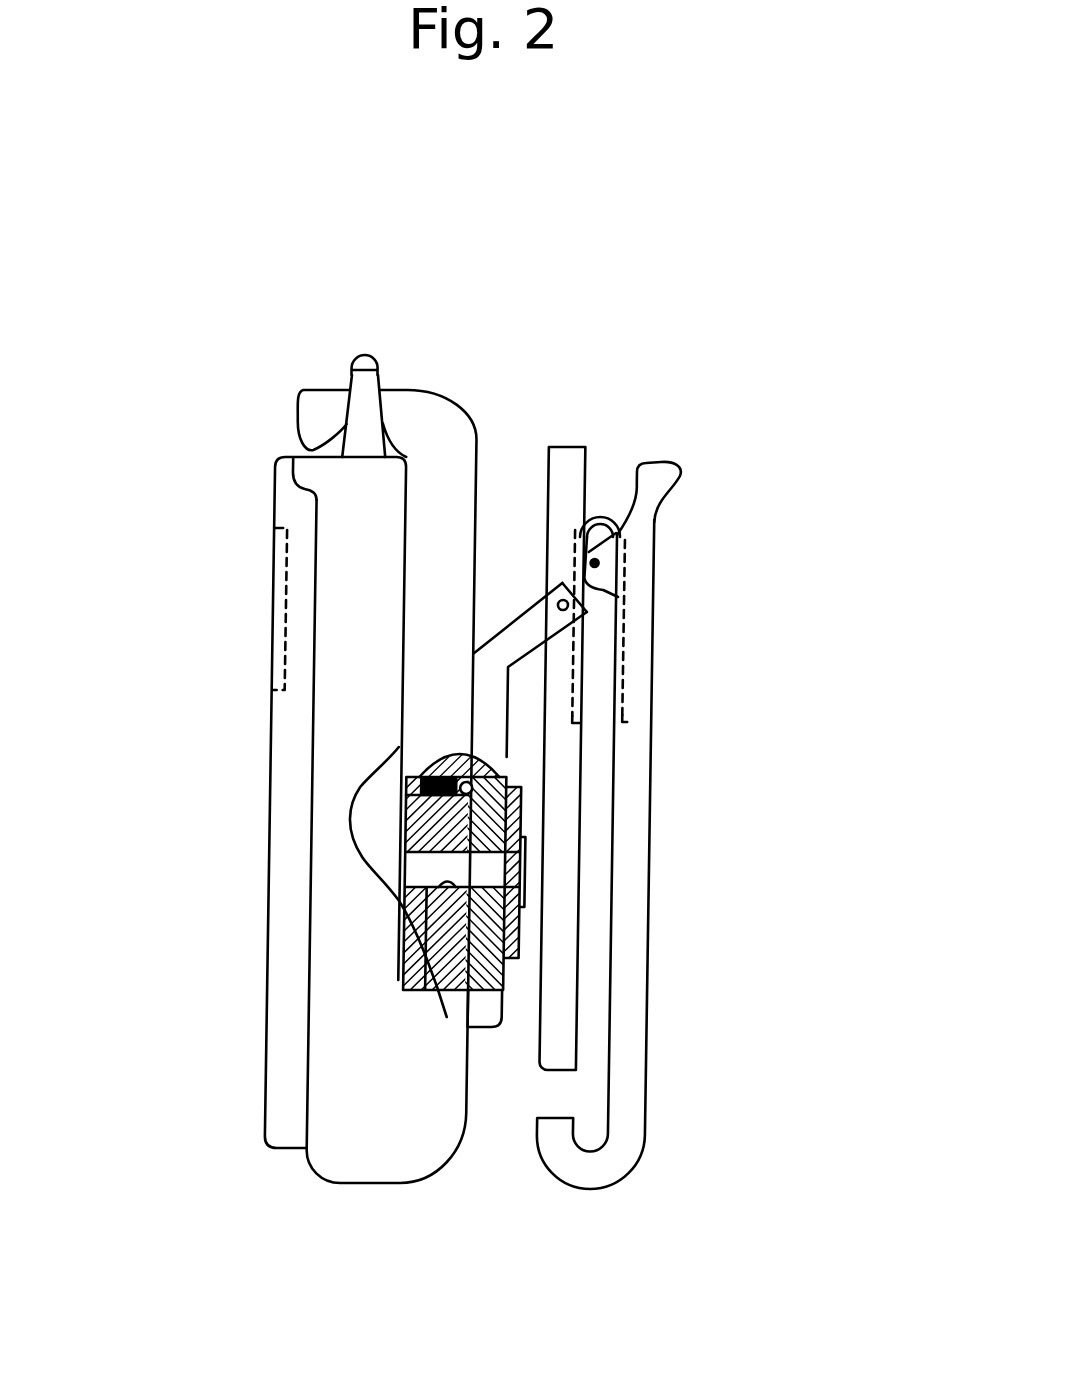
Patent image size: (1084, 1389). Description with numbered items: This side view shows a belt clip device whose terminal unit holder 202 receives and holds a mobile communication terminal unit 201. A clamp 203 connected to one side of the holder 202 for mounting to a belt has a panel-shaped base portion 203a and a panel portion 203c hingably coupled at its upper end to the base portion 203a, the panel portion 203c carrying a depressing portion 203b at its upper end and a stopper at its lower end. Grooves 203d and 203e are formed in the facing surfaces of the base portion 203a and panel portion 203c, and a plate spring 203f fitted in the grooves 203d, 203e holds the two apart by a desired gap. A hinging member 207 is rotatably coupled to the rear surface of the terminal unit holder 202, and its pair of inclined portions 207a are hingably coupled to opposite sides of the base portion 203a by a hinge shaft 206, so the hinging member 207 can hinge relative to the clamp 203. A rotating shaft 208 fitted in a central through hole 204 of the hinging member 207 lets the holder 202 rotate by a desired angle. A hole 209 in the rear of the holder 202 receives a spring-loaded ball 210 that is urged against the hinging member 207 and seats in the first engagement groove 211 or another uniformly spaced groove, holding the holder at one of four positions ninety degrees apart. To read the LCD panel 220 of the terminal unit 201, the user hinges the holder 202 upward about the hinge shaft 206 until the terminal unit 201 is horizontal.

The terminal unit 201 is at (270, 493).
The terminal unit holder 202 is at (422, 407).
The clamp 203 is at (625, 410).
The base portion 203a is at (568, 447).
The depressing portion 203b is at (680, 472).
The panel portion 203c is at (640, 1002).
The groove 203d is at (572, 650).
The groove 203e is at (623, 668).
The plate spring 203f is at (600, 515).
The through hole 204 is at (437, 997).
The hinge shaft 206 is at (573, 597).
The hinging member 207 is at (482, 672).
The inclined portion 207a is at (523, 623).
The rotating shaft 208 is at (427, 868).
The hole 209 is at (430, 762).
The spring-loaded ball 210 is at (500, 757).
The first engagement groove 211 is at (473, 787).
The LCD panel 220 is at (273, 552).